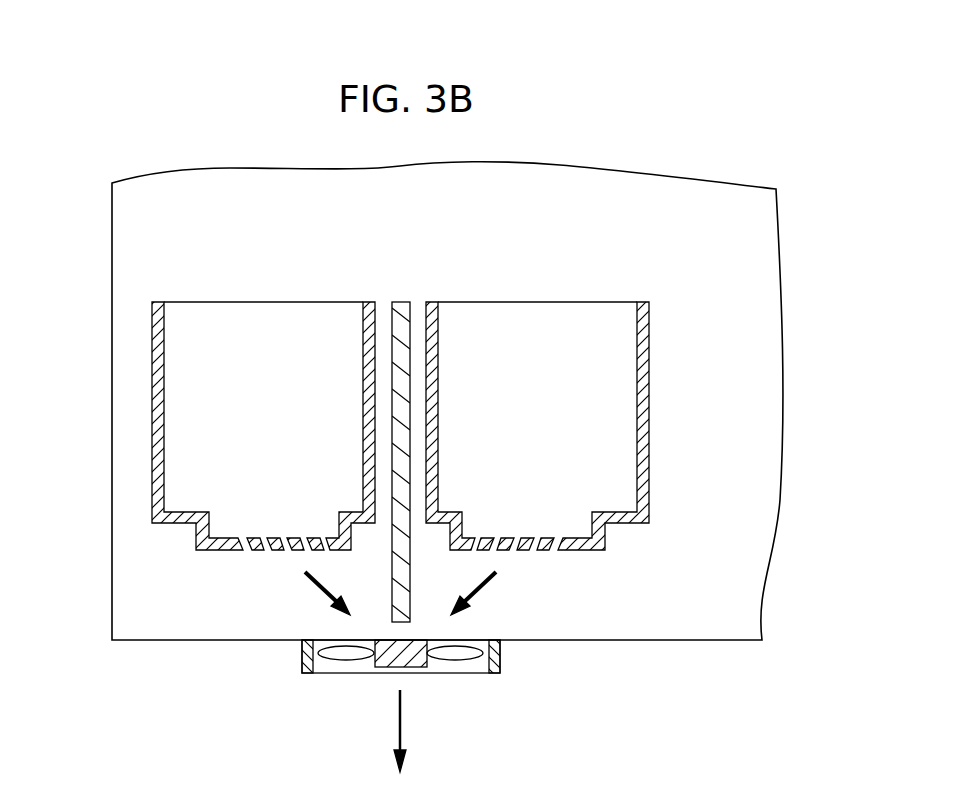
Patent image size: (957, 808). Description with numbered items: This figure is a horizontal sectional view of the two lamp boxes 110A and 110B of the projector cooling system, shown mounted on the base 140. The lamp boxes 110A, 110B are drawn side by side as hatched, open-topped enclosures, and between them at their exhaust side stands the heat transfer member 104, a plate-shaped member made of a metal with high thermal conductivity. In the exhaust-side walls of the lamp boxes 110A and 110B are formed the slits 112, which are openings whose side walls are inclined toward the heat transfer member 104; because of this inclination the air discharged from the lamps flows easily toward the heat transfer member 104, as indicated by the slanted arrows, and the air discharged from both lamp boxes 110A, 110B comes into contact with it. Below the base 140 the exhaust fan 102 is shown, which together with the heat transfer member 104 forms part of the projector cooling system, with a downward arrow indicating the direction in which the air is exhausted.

The base 140 is at (128, 342).
The lamp box 110A is at (125, 462).
The lamp box 110B is at (678, 455).
The heat transfer member 104 is at (402, 310).
The slits 112 is at (260, 548).
The exhaust fan 102 is at (483, 677).